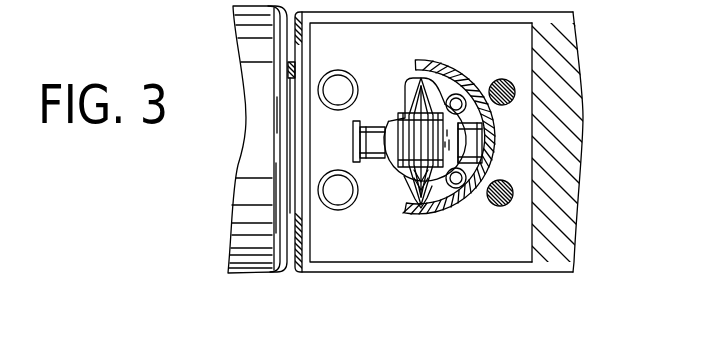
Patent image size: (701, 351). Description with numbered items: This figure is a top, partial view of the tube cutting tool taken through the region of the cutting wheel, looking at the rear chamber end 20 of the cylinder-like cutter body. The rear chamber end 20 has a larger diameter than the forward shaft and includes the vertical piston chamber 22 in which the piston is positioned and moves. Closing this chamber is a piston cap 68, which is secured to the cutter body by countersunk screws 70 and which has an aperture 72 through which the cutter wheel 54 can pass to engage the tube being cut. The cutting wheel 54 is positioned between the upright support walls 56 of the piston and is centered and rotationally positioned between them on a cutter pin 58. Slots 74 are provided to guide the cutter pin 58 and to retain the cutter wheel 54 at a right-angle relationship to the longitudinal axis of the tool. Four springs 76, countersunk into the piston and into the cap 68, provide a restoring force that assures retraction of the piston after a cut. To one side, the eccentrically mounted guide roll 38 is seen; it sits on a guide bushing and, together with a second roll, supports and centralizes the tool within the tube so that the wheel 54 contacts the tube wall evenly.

The rear chamber end 20 is at (567, 107).
The piston chamber 22 is at (495, 137).
The guide roll 38 is at (257, 252).
The cutting wheel 54 is at (405, 211).
The upright support walls 56 is at (440, 123).
The cutter pin 58 is at (370, 150).
The piston cap 68 is at (330, 248).
The countersunk screws 70 is at (336, 84).
The aperture 72 is at (421, 25).
The slots 74 is at (362, 130).
The springs 76 is at (462, 99).